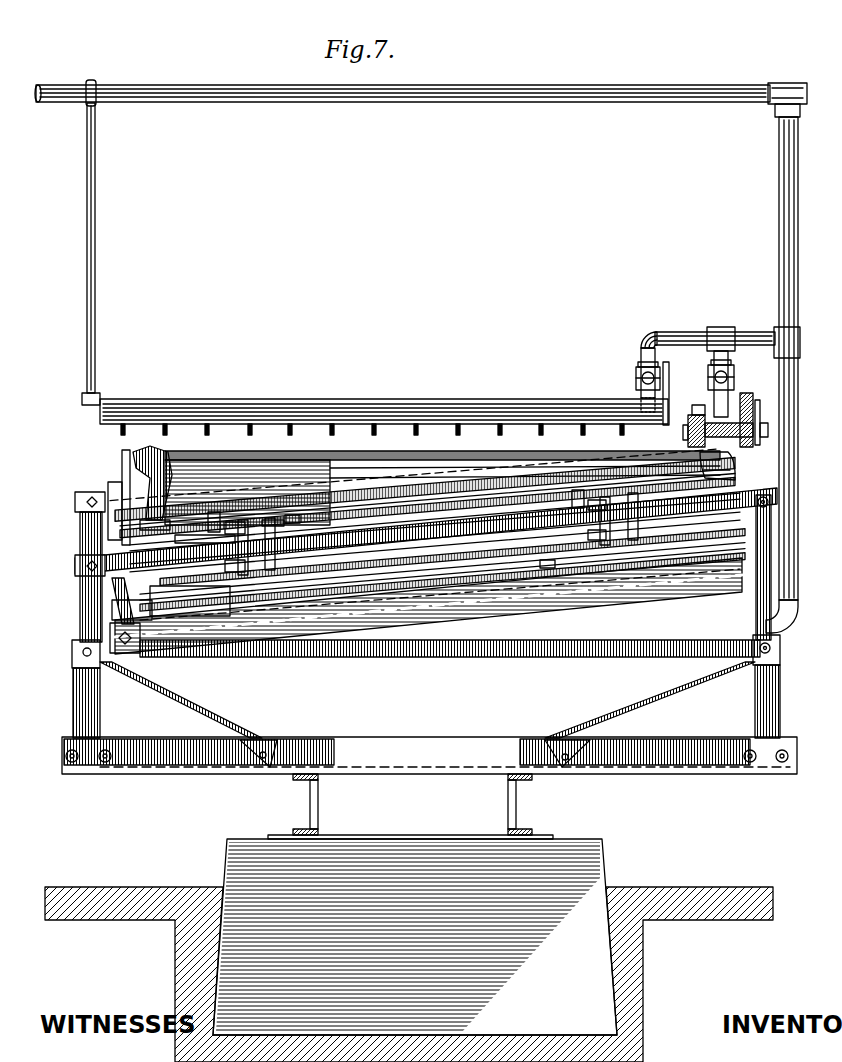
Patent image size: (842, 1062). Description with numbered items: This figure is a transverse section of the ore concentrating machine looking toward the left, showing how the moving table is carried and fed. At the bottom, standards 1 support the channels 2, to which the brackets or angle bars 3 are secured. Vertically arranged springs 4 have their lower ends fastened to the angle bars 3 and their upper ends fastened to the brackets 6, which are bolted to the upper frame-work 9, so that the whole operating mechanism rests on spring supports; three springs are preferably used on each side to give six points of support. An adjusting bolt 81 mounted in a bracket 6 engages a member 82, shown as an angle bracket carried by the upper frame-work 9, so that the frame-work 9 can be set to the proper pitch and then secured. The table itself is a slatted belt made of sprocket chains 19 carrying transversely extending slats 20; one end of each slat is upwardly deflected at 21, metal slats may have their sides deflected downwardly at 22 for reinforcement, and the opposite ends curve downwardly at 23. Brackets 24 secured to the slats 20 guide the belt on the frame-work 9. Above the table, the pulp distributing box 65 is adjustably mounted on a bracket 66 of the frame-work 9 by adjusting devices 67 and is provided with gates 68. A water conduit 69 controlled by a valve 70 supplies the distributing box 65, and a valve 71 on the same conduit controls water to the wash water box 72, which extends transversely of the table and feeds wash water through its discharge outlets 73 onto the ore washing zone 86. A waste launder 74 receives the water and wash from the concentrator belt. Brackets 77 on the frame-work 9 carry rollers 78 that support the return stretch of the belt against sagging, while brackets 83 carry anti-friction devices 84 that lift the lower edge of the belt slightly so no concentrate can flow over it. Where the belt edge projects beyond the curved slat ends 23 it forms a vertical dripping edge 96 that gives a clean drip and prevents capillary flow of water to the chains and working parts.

The standards 1 is at (578, 884).
The channels 2 is at (310, 802).
The brackets or angle bars 3 is at (185, 462).
The vertically arranged springs 4 is at (772, 704).
The brackets 6 is at (790, 632).
The upper frame-work 9 is at (106, 500).
The sprocket chains 19 is at (318, 515).
The slats 20 is at (428, 497).
The upwardly deflected end 21 is at (732, 465).
The downwardly deflected sides 22 is at (216, 598).
The curved end 23 is at (166, 604).
The brackets 24 is at (640, 520).
The pulp distributing box 65 is at (744, 400).
The bracket 66 is at (761, 488).
The adjusting devices 67 is at (760, 428).
The gates 68 is at (686, 435).
The water conduit 69 is at (784, 182).
The valve 70 is at (716, 378).
The valve 71 is at (640, 378).
The wash water box 72 is at (470, 420).
The discharge outlets 73 is at (355, 430).
The waste launder 74 is at (178, 540).
The brackets 77 is at (76, 650).
The rollers 78 is at (742, 580).
The adjusting bolt 81 is at (112, 635).
The member 82 is at (80, 500).
The brackets 83 is at (134, 460).
The anti-friction devices 84 is at (148, 448).
The ore washing zone 86 is at (282, 522).
The vertical dripping edge 96 is at (148, 524).